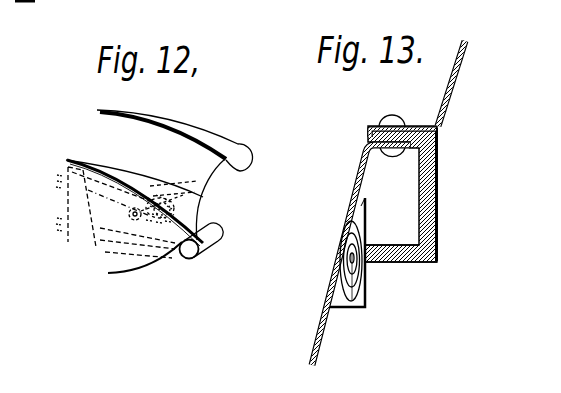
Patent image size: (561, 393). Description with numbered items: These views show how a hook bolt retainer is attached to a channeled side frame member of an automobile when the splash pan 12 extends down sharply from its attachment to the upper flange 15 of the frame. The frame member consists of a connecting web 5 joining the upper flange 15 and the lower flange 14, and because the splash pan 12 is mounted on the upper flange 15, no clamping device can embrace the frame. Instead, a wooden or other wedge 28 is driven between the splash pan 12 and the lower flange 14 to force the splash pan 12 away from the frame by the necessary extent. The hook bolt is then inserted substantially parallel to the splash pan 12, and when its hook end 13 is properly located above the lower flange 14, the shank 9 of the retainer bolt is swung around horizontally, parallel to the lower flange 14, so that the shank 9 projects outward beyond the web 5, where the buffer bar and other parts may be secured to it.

In FIG. 12, the web 5 is at (93, 172).
In FIG. 13, the web 5 is at (437, 199).
In FIG. 12, the shank 9 is at (160, 203).
In FIG. 12, the splash pan 12 is at (137, 264).
In FIG. 13, the splash pan 12 is at (318, 346).
In FIG. 12, the hook end 13 is at (132, 206).
In FIG. 12, the lower flange 14 is at (170, 258).
In FIG. 13, the lower flange 14 is at (400, 263).
In FIG. 12, the upper flange 15 is at (185, 229).
In FIG. 13, the upper flange 15 is at (368, 133).
In FIG. 12, the wedge 28 is at (80, 237).
In FIG. 13, the wedge 28 is at (354, 284).